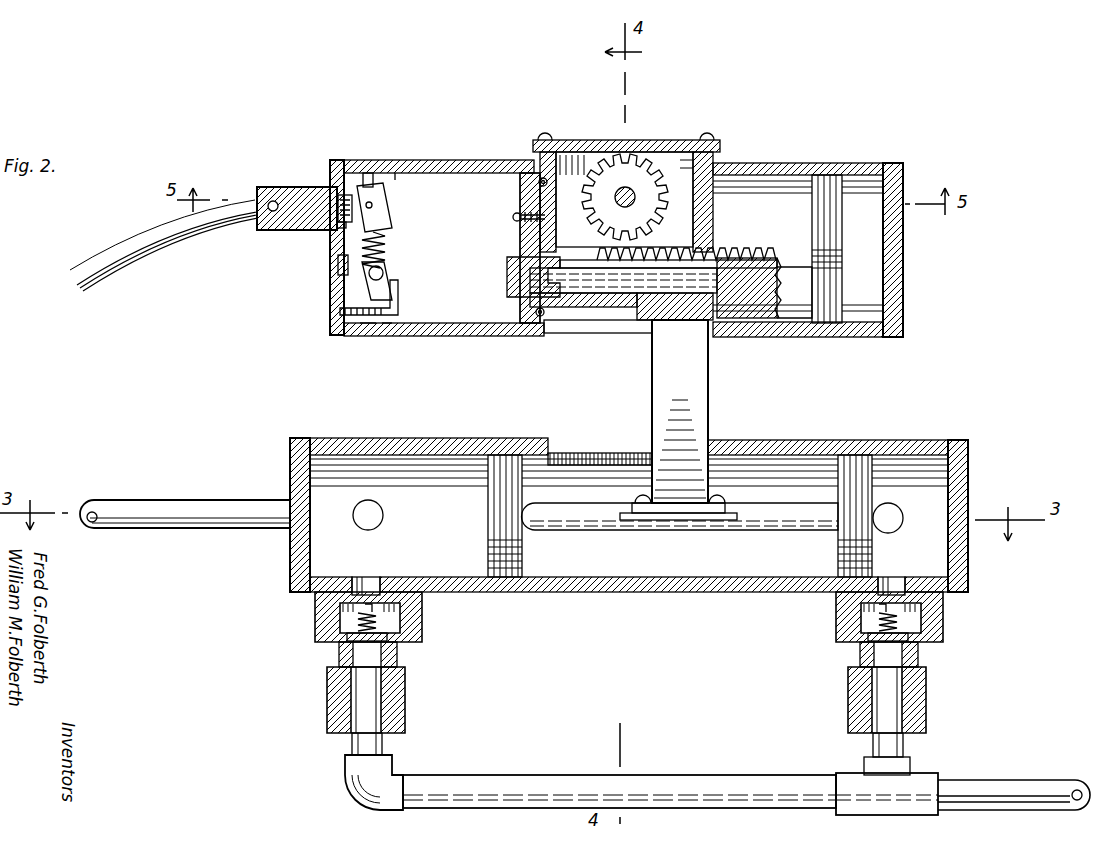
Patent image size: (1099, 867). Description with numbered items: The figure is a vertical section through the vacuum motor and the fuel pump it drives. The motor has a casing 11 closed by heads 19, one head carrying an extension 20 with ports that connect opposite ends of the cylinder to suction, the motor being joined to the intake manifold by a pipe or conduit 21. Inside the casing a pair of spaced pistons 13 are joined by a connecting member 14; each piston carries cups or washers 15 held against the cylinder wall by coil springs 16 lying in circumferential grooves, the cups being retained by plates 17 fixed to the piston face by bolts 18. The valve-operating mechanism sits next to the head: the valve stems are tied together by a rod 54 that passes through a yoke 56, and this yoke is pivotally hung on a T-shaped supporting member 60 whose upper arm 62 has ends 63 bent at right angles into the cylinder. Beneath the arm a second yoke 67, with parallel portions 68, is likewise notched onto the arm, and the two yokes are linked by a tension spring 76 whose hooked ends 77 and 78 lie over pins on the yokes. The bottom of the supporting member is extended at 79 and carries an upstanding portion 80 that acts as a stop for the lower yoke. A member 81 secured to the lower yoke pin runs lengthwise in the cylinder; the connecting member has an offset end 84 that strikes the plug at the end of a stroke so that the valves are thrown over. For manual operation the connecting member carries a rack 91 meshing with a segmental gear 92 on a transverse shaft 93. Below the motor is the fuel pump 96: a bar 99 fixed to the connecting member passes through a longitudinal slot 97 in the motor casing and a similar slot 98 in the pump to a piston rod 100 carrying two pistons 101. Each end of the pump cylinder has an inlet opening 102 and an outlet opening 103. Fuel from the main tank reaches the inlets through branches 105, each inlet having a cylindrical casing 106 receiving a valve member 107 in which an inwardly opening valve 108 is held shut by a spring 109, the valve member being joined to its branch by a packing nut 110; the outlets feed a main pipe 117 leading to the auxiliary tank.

The casing 11 is at (765, 163).
The pistons 13 is at (522, 170).
The connecting member 14 is at (784, 266).
The cups or washers 15 is at (545, 140).
The coil springs 16 is at (566, 150).
The plates 17 is at (517, 196).
The bolts 18 is at (512, 221).
The heads 19 is at (336, 163).
The extension 20 is at (279, 190).
The pipe or conduit 21 is at (157, 235).
The rod 54 is at (388, 212).
The yoke 56 is at (372, 180).
The supporting member 60 is at (338, 268).
The upper arm 62 is at (340, 252).
The right-angled ends 63 is at (350, 237).
The yoke 67 is at (387, 324).
The parallel portions 68 is at (385, 270).
The tension spring 76 is at (388, 246).
The hooked end 77 is at (396, 172).
The hooked end 78 is at (368, 293).
The outward extension 79 is at (374, 324).
The upstanding portion 80 is at (400, 300).
The member 81 is at (475, 272).
The offset end 84 is at (573, 284).
The rack 91 is at (724, 262).
The segmental gear 92 is at (625, 197).
The transverse shaft 93 is at (614, 204).
The fuel pump 96 is at (765, 442).
The longitudinal slot 97 is at (560, 333).
The slot 98 is at (565, 452).
The bar 99 is at (678, 420).
The piston rod 100 is at (566, 520).
The pistons 101 is at (500, 468).
The inlet opening 102 is at (378, 580).
The outlet opening 103 is at (365, 518).
The branches 105 is at (350, 742).
The cylindrical casings 106 is at (423, 620).
The valve members 107 is at (415, 660).
The inwardly opening valve 108 is at (392, 637).
The spring 109 is at (355, 622).
The packing nut 110 is at (408, 700).
The main pipe 117 is at (212, 497).